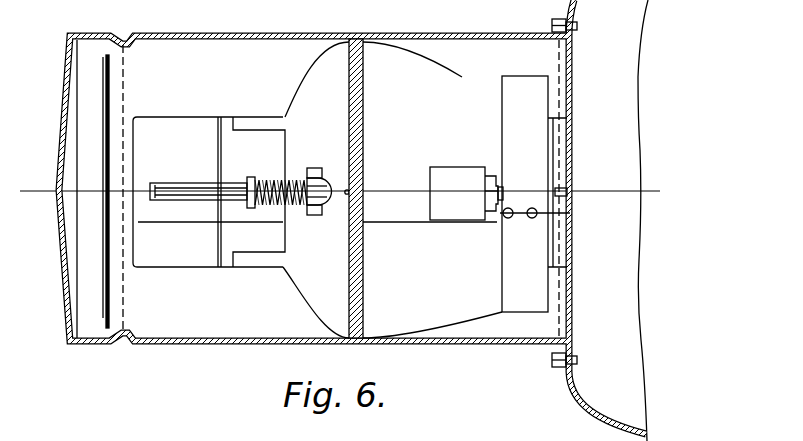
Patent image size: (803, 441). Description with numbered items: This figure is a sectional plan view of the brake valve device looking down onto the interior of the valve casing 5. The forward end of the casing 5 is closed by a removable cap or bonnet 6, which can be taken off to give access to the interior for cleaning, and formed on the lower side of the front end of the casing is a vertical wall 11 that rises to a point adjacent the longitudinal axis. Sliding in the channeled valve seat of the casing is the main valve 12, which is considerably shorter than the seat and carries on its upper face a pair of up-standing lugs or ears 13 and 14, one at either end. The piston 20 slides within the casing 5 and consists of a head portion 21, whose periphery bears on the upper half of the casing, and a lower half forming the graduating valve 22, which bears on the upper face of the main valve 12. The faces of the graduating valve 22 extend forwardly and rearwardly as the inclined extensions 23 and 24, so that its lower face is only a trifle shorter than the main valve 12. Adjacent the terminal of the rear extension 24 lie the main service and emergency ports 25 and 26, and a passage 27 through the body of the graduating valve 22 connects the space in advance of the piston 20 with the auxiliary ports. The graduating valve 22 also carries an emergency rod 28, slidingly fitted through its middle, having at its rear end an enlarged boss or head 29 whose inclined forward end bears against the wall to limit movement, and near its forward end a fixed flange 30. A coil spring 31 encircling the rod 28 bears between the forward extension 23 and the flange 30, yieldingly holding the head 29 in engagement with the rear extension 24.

The valve casing 5 is at (178, 33).
The removable cap or bonnet 6 is at (67, 70).
The vertical wall 11 is at (107, 223).
The main valve 12 is at (233, 240).
The up-standing lug or ear 13 is at (218, 117).
The up-standing lug or ear 14 is at (548, 134).
The piston 20 is at (393, 190).
The head portion 21 is at (355, 88).
The graduating valve 22 is at (408, 201).
The forward extension 23 is at (315, 278).
The rear extension 24 is at (462, 77).
The main service port 25 is at (511, 209).
The main emergency port 26 is at (532, 219).
The passage 27 is at (346, 189).
The emergency rod 28 is at (180, 190).
The boss or head 29 is at (462, 208).
The flange 30 is at (250, 179).
The coil spring 31 is at (293, 180).